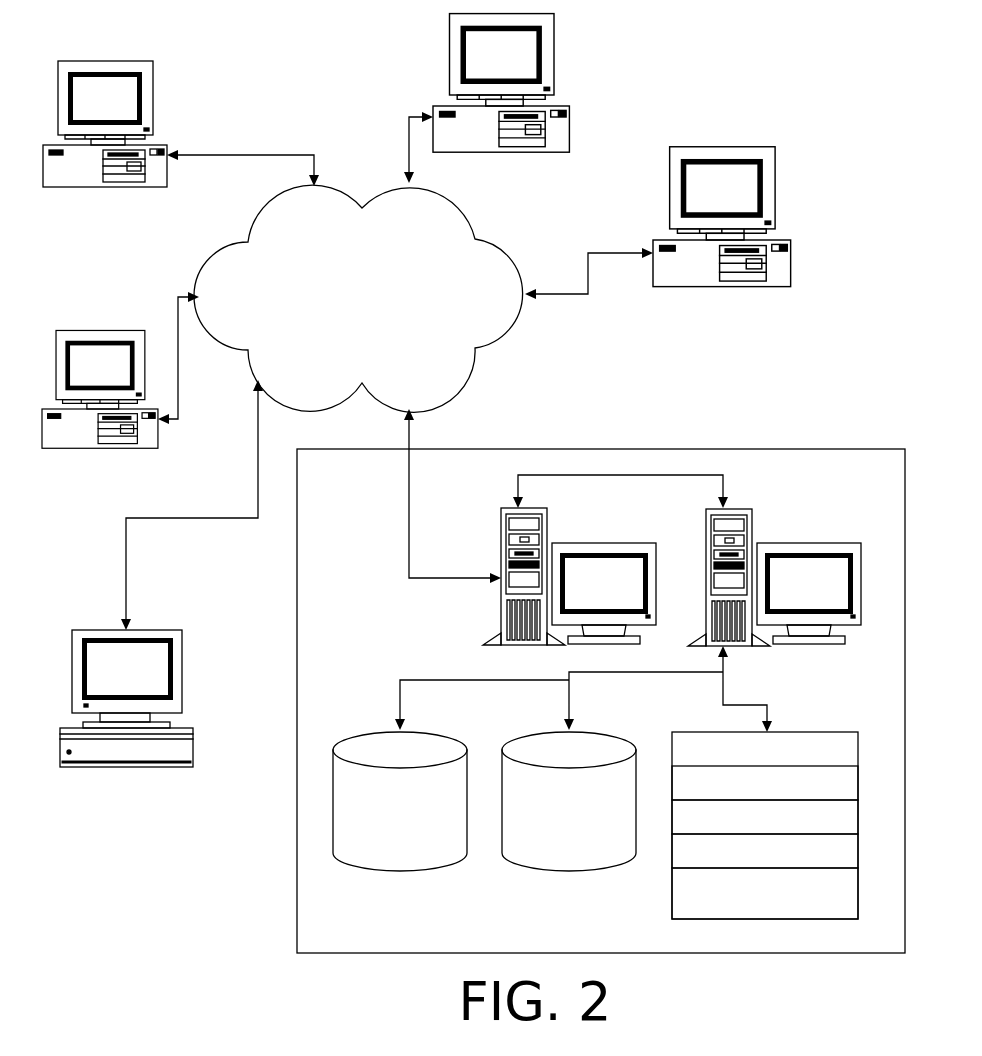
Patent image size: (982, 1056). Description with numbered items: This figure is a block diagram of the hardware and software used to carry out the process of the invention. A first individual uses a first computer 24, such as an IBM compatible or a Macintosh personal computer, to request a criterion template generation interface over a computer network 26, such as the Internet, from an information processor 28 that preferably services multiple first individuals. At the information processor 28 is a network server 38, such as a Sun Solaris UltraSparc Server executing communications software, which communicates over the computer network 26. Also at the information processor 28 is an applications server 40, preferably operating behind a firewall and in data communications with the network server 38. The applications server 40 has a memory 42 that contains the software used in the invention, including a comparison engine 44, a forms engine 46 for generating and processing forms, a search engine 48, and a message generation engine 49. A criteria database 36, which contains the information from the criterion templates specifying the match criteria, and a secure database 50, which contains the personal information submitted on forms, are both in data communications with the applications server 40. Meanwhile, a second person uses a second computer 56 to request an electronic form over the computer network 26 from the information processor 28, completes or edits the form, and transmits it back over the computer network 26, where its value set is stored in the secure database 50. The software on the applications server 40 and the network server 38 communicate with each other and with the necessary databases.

The first computer 24 is at (569, 134).
The computer network 26 is at (468, 365).
The information processor 28 is at (652, 449).
The criteria database 36 is at (396, 868).
The network server 38 is at (543, 508).
The applications server 40 is at (748, 509).
The memory 42 is at (808, 732).
The comparison engine 44 is at (858, 846).
The forms engine 46 is at (858, 782).
The search engine 48 is at (858, 812).
The message generation engine 49 is at (858, 893).
The secure database 50 is at (565, 868).
The second computer 56 is at (170, 172).